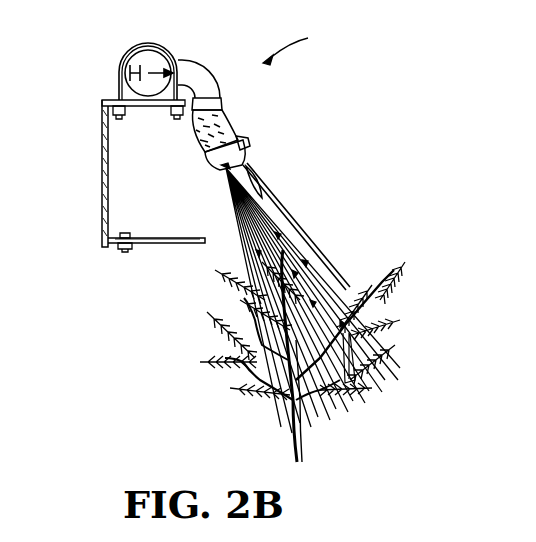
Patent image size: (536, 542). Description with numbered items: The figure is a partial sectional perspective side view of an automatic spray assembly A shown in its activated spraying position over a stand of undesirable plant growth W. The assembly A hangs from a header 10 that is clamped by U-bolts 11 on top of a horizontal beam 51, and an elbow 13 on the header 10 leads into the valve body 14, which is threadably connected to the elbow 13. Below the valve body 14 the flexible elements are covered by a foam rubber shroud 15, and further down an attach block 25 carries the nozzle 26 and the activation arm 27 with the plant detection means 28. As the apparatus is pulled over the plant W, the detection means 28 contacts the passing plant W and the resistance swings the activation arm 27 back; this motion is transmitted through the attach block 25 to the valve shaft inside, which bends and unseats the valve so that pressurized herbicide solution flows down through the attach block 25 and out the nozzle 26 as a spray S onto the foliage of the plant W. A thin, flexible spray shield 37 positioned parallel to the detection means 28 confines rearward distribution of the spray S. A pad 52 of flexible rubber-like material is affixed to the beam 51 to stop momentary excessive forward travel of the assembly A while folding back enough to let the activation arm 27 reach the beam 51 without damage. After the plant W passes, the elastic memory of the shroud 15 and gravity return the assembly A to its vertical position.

The header 10 is at (150, 50).
The U-bolts 11 is at (119, 65).
The elbow 13 is at (198, 62).
The valve body 14 is at (222, 102).
The foam rubber shroud 15 is at (226, 126).
The attach block 25 is at (249, 142).
The nozzle 26 is at (220, 170).
The spray shield 37 is at (264, 178).
The activation arm 27 is at (284, 212).
The plant detection means 28 is at (366, 318).
The horizontal beam 51 is at (101, 140).
The pad 52 is at (187, 244).
The spray S is at (246, 265).
The undesirable plant growth W is at (275, 400).
The automatic spray assembly A is at (291, 45).